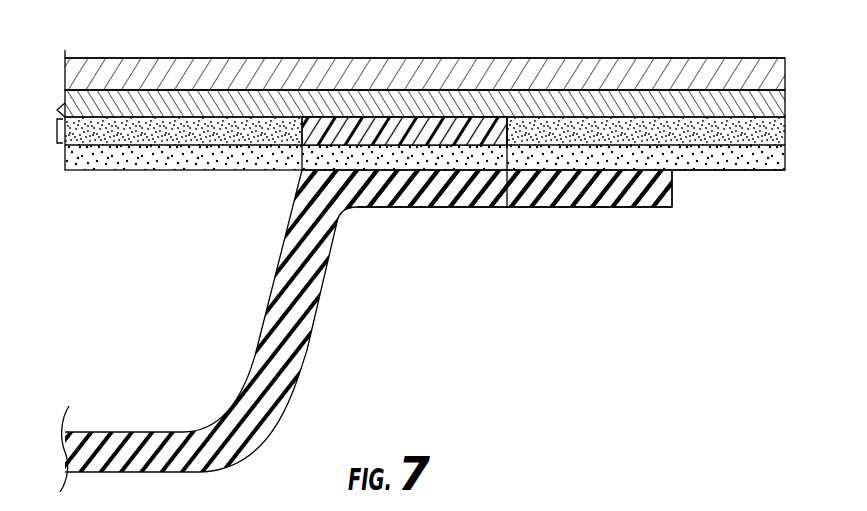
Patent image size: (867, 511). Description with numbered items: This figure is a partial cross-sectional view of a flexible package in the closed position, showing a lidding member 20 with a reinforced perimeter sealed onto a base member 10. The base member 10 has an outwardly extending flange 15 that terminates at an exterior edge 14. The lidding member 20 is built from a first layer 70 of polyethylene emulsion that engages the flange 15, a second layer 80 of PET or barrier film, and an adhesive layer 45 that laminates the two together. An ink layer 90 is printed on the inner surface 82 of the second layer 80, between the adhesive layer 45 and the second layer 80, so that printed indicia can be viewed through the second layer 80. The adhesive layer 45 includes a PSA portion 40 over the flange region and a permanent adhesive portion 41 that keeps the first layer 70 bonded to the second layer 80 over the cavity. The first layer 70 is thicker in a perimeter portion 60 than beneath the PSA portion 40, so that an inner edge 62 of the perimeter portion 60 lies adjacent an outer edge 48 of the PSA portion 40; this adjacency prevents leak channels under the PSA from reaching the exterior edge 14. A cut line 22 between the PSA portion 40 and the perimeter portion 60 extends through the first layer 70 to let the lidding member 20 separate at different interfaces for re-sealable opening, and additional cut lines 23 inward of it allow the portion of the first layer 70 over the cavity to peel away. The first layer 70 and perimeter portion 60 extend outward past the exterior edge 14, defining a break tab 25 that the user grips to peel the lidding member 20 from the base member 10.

The base member 10 is at (290, 333).
The exterior edge 14 is at (672, 192).
The flange 15 is at (557, 206).
The lidding member 20 is at (372, 78).
The cut line 22 is at (507, 208).
The cut lines 23 is at (302, 117).
The break tab 25 is at (731, 190).
The PSA portion 40 is at (400, 128).
The permanent adhesive portion 41 is at (178, 128).
The adhesive layer 45 is at (57, 132).
The outer edge 48 is at (510, 125).
The perimeter portion 60 is at (740, 158).
The inner edge 62 is at (503, 135).
The first layer 70 is at (790, 117).
The second layer 80 is at (790, 58).
The inner surface 82 is at (246, 99).
The ink layer 90 is at (785, 110).